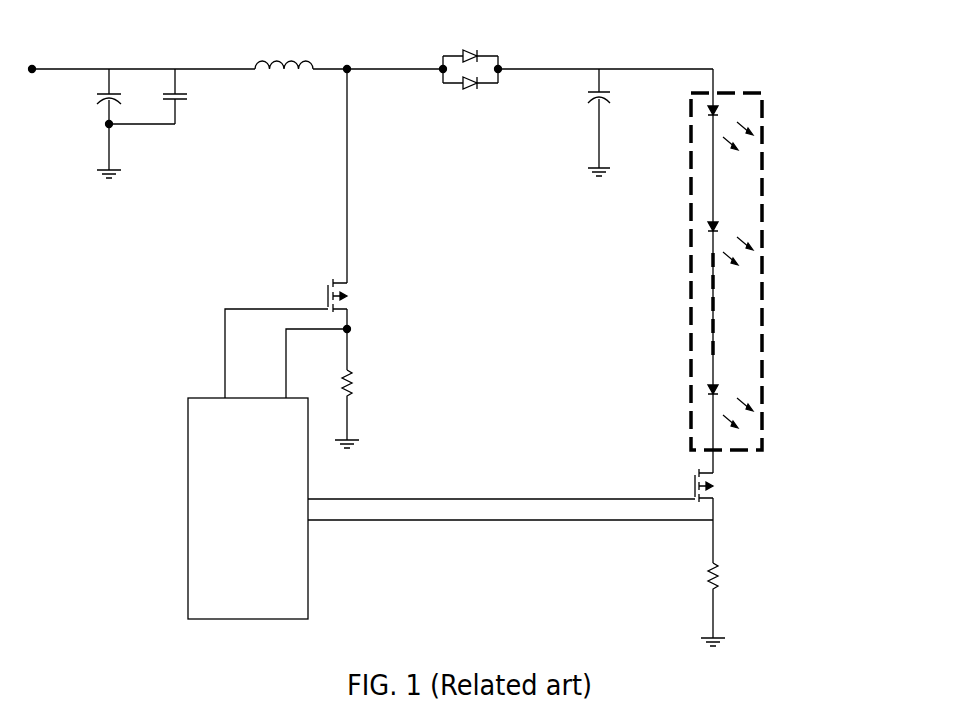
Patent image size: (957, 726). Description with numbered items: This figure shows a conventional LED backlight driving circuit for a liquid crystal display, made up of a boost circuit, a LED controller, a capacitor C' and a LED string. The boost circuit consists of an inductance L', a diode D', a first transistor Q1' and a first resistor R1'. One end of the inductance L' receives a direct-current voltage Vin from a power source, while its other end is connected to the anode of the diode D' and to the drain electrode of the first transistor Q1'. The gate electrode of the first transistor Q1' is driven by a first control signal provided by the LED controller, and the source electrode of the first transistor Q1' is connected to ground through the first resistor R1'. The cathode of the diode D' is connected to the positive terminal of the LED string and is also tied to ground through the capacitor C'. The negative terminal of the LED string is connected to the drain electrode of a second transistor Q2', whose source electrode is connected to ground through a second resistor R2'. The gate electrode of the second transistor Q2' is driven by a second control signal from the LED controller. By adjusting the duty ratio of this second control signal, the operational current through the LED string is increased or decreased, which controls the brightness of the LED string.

The direct-current voltage Vin is at (34, 54).
The inductance L' is at (284, 52).
The diode D' is at (471, 58).
The capacitor C' is at (616, 122).
The LED strip LED string is at (762, 93).
The first transistor Q1' is at (360, 295).
The first resistor R1' is at (362, 409).
The second transistor Q2' is at (726, 485).
The second resistor R2' is at (726, 604).
The element LED controller is at (248, 508).